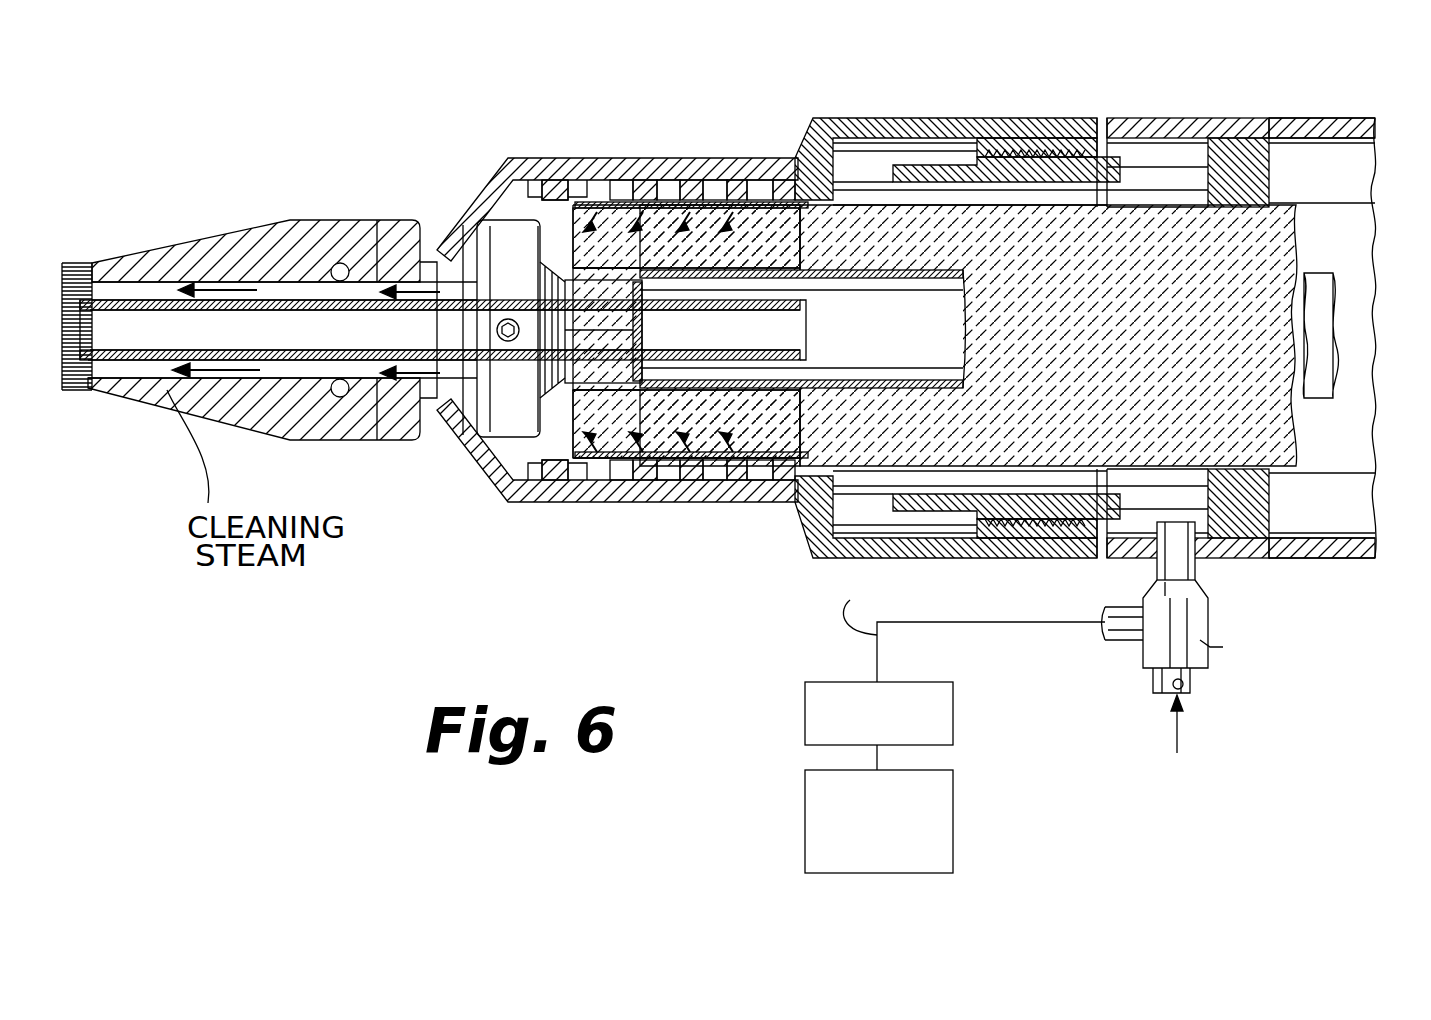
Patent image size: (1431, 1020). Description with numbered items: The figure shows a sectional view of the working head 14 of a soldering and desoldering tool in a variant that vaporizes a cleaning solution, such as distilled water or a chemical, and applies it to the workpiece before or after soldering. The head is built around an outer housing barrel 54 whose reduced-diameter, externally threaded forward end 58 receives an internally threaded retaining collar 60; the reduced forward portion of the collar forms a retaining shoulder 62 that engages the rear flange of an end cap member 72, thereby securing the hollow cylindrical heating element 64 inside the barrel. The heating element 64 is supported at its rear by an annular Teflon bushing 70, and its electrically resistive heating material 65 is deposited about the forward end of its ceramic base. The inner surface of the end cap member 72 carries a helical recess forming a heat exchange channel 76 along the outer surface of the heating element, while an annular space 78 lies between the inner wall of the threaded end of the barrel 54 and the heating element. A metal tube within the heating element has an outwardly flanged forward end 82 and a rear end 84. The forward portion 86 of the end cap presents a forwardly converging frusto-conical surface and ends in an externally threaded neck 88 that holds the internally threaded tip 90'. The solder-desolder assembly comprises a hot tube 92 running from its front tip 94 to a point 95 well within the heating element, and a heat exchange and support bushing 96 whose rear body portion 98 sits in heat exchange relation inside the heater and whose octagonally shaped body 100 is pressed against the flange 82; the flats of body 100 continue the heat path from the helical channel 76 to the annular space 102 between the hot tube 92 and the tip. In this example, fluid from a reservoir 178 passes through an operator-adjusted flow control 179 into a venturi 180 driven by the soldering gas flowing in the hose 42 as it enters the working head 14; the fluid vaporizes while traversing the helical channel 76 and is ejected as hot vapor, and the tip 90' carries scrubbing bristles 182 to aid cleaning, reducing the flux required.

The working head 14 is at (1161, 122).
The hose 42 is at (1152, 687).
The outer housing barrel 54 is at (1358, 119).
The forward end of the barrel 58 is at (985, 150).
The retaining collar 60 is at (1040, 118).
The retaining shoulder 62 is at (795, 150).
The heating element 64 is at (1145, 356).
The electrically resistive heating material 65 is at (622, 210).
The annular Teflon bushing 70 is at (1283, 148).
The end cap member 72 is at (565, 200).
The heat exchange channel 76 is at (668, 195).
The annular space 78 is at (922, 153).
The flanged forward end 82 is at (620, 365).
The rear end of the tube 84 is at (898, 368).
The forward portion of the end cap 86 is at (453, 220).
The externally threaded neck 88 is at (368, 258).
The tip 90' is at (254, 302).
The hot tube 92 is at (277, 314).
The front tip of the hot tube 94 is at (117, 393).
The point within the heating element 95 is at (806, 306).
The heat exchange and support bushing 96 is at (520, 217).
The rear body portion 98 is at (618, 322).
The octagonally shaped body 100 is at (530, 268).
The annular space 102 is at (158, 283).
The reservoir 178 is at (953, 828).
The flow control 179 is at (953, 720).
The venturi 180 is at (1123, 657).
The scrubbing bristles 182 is at (73, 393).